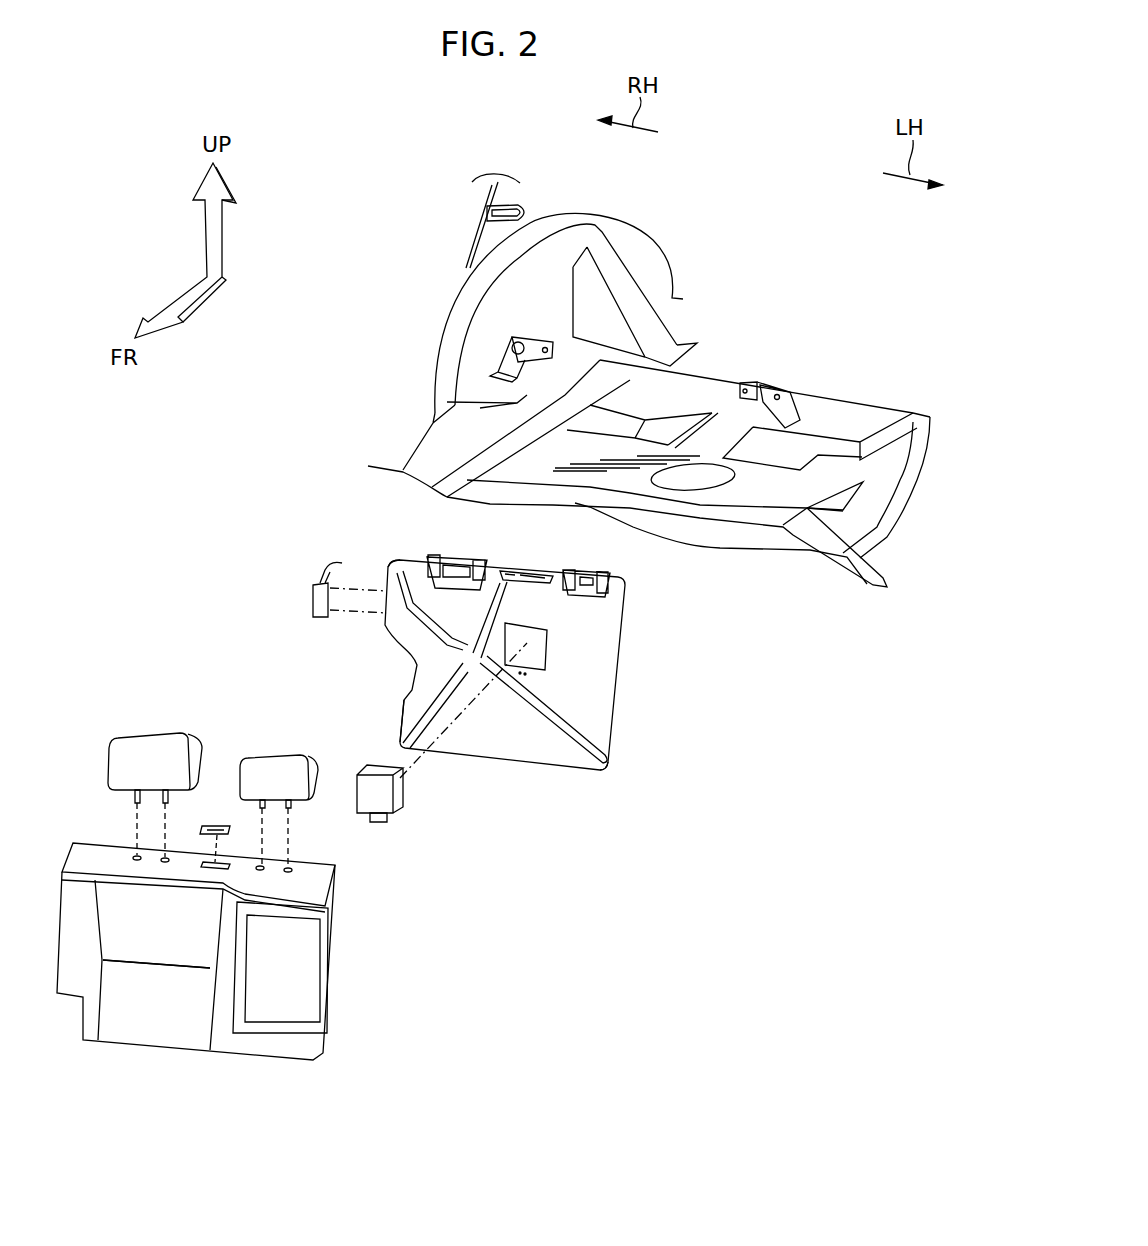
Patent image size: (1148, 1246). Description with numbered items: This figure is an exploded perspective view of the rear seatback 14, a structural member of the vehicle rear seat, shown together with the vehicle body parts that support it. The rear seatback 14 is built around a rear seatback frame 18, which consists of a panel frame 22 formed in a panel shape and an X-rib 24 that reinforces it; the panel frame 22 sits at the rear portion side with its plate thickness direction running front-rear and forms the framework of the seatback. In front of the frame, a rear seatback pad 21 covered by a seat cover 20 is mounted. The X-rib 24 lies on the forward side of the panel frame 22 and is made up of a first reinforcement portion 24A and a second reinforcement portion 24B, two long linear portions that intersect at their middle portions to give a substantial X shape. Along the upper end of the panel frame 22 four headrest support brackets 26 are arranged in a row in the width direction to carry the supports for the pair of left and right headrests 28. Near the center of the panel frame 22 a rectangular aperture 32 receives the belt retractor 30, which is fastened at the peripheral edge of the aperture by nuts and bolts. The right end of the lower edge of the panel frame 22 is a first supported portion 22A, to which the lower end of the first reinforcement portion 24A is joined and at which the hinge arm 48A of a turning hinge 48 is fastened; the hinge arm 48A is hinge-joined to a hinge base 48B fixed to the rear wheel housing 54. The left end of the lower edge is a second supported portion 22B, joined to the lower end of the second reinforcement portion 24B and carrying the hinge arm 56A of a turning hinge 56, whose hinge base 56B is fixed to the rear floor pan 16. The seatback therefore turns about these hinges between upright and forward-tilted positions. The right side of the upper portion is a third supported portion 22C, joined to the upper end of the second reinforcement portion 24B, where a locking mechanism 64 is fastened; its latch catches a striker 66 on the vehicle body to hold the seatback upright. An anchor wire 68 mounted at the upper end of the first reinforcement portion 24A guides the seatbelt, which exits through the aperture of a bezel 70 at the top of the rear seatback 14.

The rear seatback 14 is at (538, 898).
The rear floor pan 16 is at (867, 417).
The rear seatback frame 18 is at (502, 633).
The seat cover 20 is at (196, 966).
The rear seatback pad 21 is at (148, 1025).
The panel frame 22 is at (625, 612).
The first supported portion 22A is at (400, 727).
The second supported portion 22B is at (605, 750).
The third supported portion 22C is at (390, 568).
The X-rib 24 is at (463, 667).
The first reinforcement portion 24A is at (430, 693).
The second reinforcement portion 24B is at (522, 692).
The headrest support brackets 26 is at (475, 558).
The headrests 28 is at (155, 733).
The belt retractor 30 is at (397, 815).
The rectangular aperture 32 is at (548, 640).
The turning hinge 48 is at (419, 343).
The hinge arm 48A is at (540, 338).
The hinge base 48B is at (498, 358).
The rear wheel housing 54 is at (627, 223).
The turning hinge 56 is at (812, 343).
The hinge arm 56A is at (760, 383).
The hinge base 56B is at (797, 407).
The locking mechanism 64 is at (312, 604).
The striker 66 is at (523, 207).
The anchor wire 68 is at (520, 570).
The bezel 70 is at (217, 822).